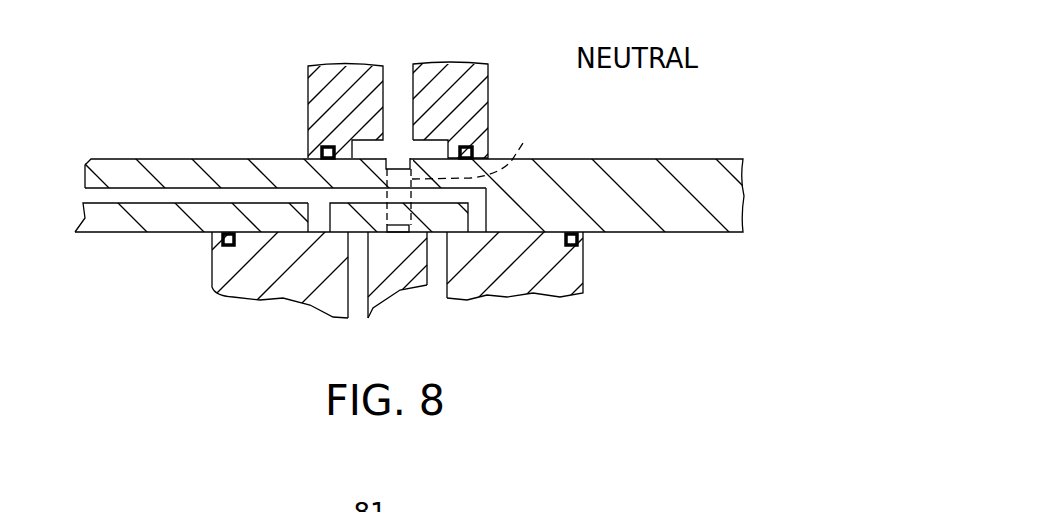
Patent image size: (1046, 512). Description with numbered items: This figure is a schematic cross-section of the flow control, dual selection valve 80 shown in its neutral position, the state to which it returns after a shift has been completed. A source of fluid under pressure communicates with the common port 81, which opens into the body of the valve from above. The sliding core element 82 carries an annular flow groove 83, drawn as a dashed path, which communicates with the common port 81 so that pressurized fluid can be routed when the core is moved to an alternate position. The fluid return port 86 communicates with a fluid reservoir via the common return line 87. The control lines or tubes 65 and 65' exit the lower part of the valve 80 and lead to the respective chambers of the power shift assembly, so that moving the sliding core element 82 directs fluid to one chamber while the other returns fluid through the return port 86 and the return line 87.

The flow control, dual selection valve 80 is at (278, 105).
The common port 81 is at (398, 77).
The sliding core element 82 is at (616, 233).
The annular flow groove 83 is at (479, 144).
The fluid return port 86 is at (478, 223).
The common return line 87 is at (102, 196).
The control line 65 is at (345, 295).
The control line 65' is at (428, 295).